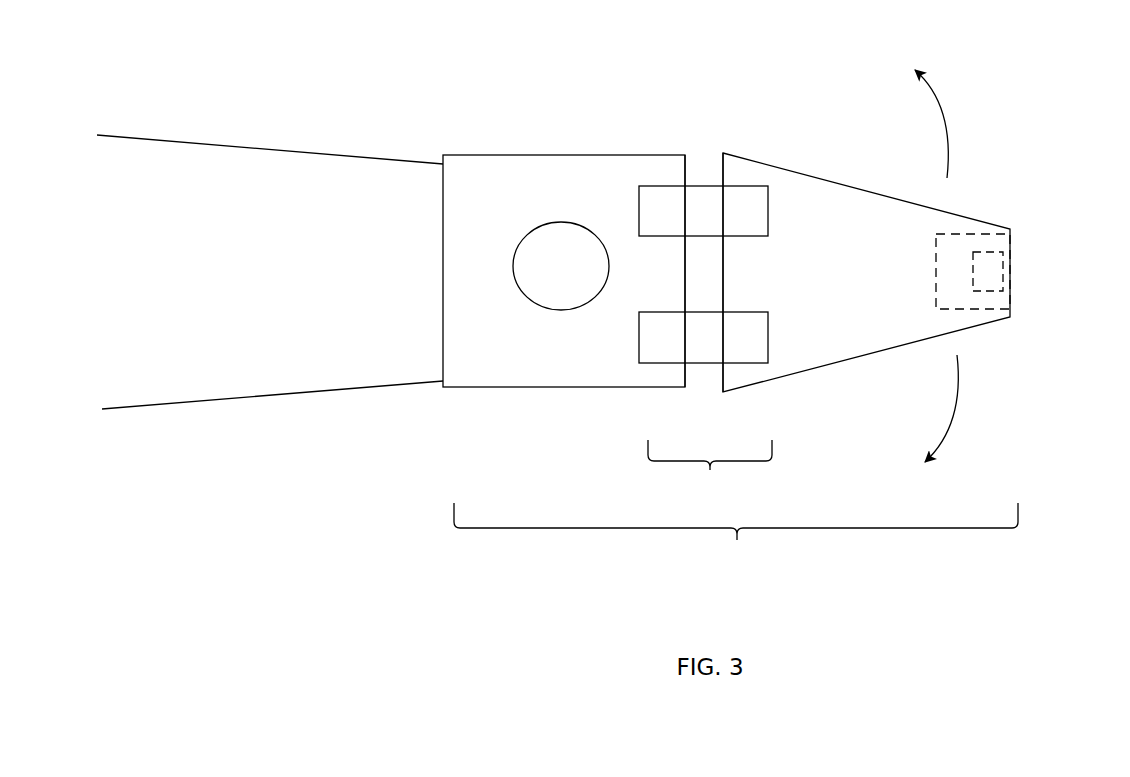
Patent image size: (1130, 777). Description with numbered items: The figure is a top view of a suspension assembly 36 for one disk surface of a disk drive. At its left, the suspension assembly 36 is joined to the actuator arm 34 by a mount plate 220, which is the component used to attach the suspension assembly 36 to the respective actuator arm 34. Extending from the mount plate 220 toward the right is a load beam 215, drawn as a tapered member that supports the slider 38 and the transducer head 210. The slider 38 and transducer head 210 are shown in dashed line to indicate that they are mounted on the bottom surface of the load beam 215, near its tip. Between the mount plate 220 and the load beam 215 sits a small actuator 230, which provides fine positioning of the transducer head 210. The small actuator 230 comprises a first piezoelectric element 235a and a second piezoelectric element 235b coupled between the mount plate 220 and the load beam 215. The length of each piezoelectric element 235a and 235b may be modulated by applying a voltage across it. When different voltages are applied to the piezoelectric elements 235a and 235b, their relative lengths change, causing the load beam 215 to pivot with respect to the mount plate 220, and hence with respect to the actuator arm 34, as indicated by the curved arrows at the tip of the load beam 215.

The actuator arm 34 is at (214, 134).
The suspension assembly 36 is at (736, 539).
The slider 38 is at (963, 232).
The transducer head 210 is at (1006, 266).
The load beam 215 is at (805, 172).
The mount plate 220 is at (520, 151).
The small actuator 230 is at (710, 328).
The first piezoelectric element 235a is at (699, 174).
The second piezoelectric element 235b is at (704, 372).